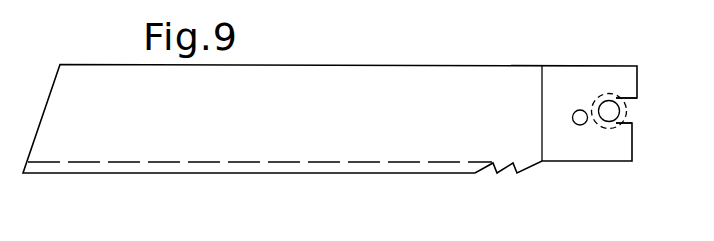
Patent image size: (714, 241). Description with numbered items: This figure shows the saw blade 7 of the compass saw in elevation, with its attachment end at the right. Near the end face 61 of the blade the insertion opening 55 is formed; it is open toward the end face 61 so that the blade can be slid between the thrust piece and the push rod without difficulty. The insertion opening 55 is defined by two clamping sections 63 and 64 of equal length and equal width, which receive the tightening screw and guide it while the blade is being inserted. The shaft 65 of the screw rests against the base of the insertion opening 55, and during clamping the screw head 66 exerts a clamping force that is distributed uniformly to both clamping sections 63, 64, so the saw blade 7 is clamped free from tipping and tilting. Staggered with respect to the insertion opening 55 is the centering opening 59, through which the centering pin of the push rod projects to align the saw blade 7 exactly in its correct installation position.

The saw blade 7 is at (275, 93).
The centering opening 59 is at (577, 110).
The clamping section 63 is at (600, 77).
The end face 61 is at (638, 90).
The insertion opening 55 is at (620, 122).
The shaft 65 is at (594, 123).
The clamping section 64 is at (605, 146).
The screw head 66 is at (622, 110).